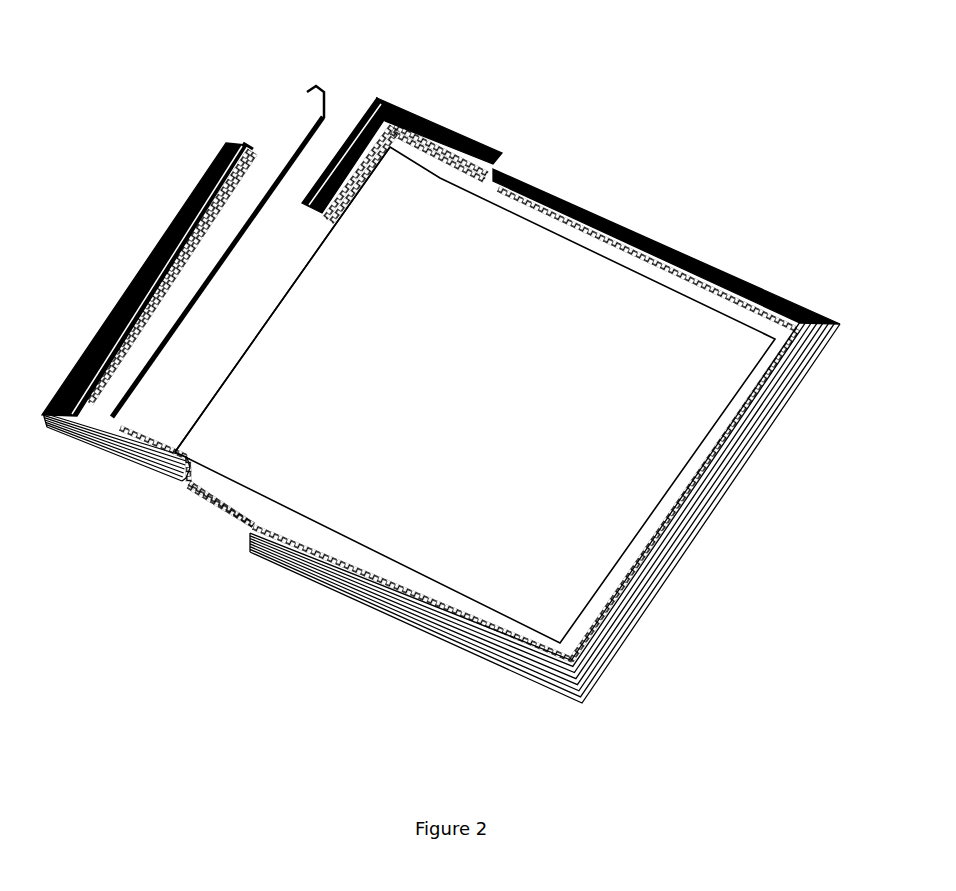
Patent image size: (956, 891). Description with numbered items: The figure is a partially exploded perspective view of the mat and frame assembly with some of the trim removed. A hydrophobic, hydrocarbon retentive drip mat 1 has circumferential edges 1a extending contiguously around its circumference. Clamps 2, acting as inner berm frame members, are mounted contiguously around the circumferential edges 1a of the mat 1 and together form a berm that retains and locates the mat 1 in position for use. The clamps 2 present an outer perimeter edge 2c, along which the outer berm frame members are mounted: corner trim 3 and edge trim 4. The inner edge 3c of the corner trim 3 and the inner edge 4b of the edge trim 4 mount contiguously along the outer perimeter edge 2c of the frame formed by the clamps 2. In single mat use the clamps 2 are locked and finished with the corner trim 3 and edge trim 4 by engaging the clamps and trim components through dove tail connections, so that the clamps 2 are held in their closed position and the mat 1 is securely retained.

The mat 1 is at (478, 250).
The circumferential edges 1a is at (237, 358).
The clamps 2 is at (608, 245).
The outer perimeter edge 2c is at (300, 105).
The corner trim 3 is at (452, 122).
The inner edge 3c is at (327, 213).
The edge trim 4 is at (693, 250).
The inner edge 4b is at (252, 150).